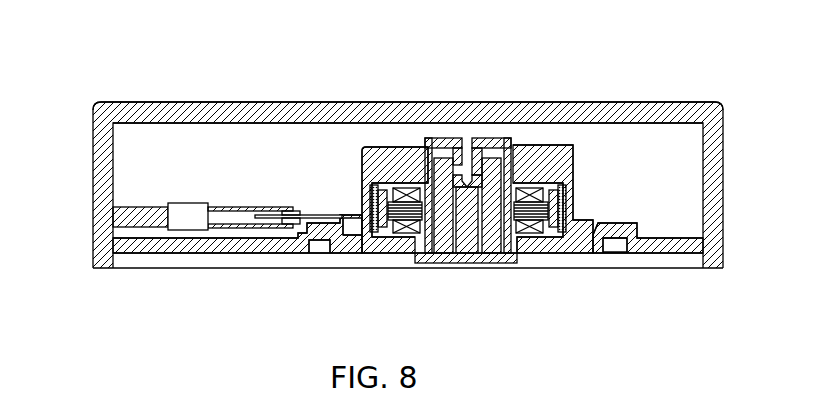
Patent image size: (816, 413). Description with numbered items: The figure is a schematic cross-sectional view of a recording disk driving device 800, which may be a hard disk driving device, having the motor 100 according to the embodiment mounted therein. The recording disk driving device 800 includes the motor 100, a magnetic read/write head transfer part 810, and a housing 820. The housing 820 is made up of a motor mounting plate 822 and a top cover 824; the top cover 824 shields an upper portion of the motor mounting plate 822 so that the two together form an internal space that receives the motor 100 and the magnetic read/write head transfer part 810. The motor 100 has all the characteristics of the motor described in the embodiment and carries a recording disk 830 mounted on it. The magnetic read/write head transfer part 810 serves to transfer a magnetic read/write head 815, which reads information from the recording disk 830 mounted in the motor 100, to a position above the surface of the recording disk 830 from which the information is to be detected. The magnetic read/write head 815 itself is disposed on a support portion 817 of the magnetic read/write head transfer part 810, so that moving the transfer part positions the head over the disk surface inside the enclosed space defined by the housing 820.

The recording disk driving device 800 is at (426, 42).
The housing 820 is at (88, 165).
The motor mounting plate 822 is at (713, 245).
The top cover 824 is at (248, 114).
The recording disk 830 is at (296, 240).
The magnetic read/write head transfer part 810 is at (187, 240).
The magnetic read/write head 815 is at (298, 212).
The support portion 817 is at (247, 229).
The motor 100 is at (498, 132).